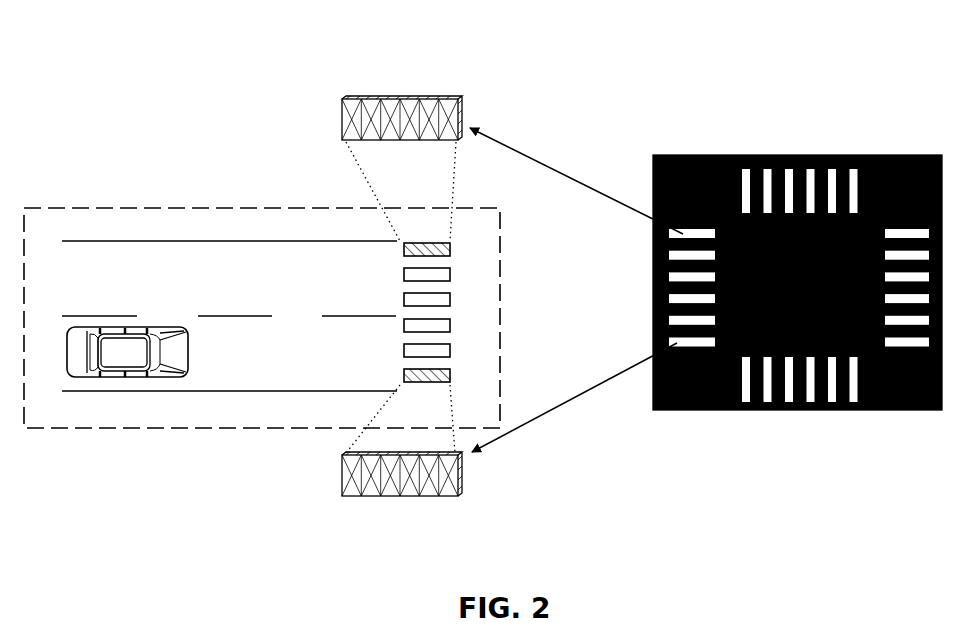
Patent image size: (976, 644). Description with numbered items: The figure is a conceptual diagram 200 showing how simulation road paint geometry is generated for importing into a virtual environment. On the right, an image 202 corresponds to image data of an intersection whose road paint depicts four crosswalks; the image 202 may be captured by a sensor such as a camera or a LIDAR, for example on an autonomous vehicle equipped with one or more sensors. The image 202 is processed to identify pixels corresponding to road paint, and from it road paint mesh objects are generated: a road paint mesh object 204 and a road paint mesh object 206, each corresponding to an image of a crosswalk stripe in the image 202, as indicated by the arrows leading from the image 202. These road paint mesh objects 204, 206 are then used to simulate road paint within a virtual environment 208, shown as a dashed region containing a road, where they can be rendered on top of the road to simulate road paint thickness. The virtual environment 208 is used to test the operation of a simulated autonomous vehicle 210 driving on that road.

The conceptual diagram 200 is at (92, 52).
The image 202 is at (778, 155).
The road paint mesh object 204 is at (344, 99).
The road paint mesh object 206 is at (343, 476).
The virtual environment 208 is at (199, 208).
The simulated autonomous vehicle 210 is at (127, 352).